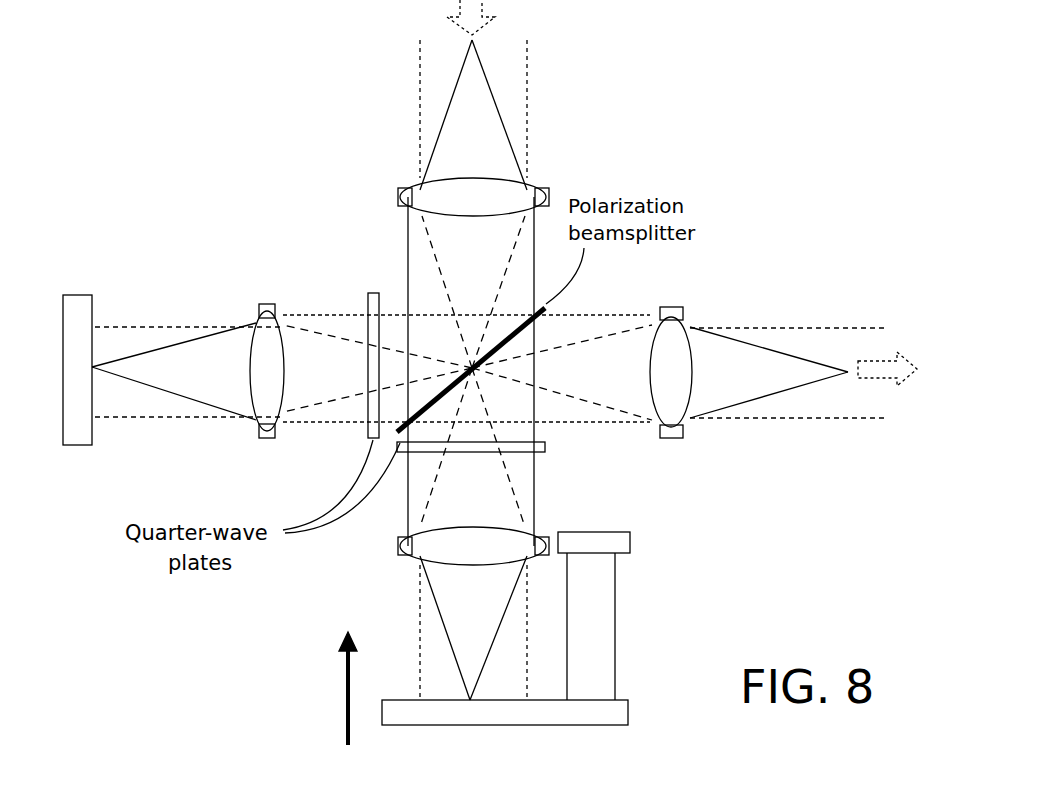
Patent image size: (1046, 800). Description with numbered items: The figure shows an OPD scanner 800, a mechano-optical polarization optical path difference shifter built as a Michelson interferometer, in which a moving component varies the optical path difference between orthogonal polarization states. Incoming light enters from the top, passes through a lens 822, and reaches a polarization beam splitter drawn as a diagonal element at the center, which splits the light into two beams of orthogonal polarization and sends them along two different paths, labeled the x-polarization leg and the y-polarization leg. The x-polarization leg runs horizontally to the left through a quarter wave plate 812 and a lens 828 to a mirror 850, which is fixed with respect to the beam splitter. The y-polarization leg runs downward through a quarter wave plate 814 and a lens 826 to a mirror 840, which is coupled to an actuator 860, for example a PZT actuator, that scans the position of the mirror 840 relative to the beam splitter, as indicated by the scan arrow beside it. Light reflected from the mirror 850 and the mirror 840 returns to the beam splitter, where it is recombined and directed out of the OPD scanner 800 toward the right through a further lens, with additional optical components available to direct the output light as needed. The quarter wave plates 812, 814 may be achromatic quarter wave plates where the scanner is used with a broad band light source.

The OPD scanner 800 is at (198, 141).
The quarter wave plate 812 is at (373, 292).
The quarter wave plate 814 is at (545, 447).
The lens 822 is at (549, 195).
The lens 826 is at (405, 549).
The lens 828 is at (265, 308).
The mirror 840 is at (545, 308).
The mirror 850 is at (63, 440).
The actuator 860 is at (630, 548).